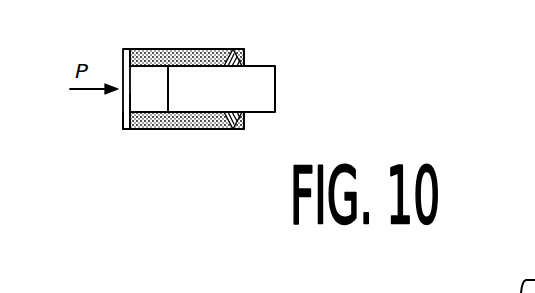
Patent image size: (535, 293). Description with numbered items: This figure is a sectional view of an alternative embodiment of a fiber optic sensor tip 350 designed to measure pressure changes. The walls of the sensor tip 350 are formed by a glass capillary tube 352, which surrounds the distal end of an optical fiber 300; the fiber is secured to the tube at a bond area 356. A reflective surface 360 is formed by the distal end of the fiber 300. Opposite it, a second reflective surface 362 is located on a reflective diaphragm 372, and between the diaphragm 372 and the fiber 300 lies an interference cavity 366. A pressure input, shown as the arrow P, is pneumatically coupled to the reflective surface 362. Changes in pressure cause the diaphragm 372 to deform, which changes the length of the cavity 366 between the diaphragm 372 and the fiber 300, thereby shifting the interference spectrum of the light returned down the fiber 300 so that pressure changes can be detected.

The optical fiber 300 is at (258, 70).
The sensor tip 350 is at (172, 124).
The glass capillary tube 352 is at (169, 49).
The bond area 356 is at (222, 124).
The reflective surface 360 is at (175, 105).
The reflective surface 362 is at (133, 74).
The interference cavity 366 is at (143, 93).
The reflective diaphragm 372 is at (123, 121).